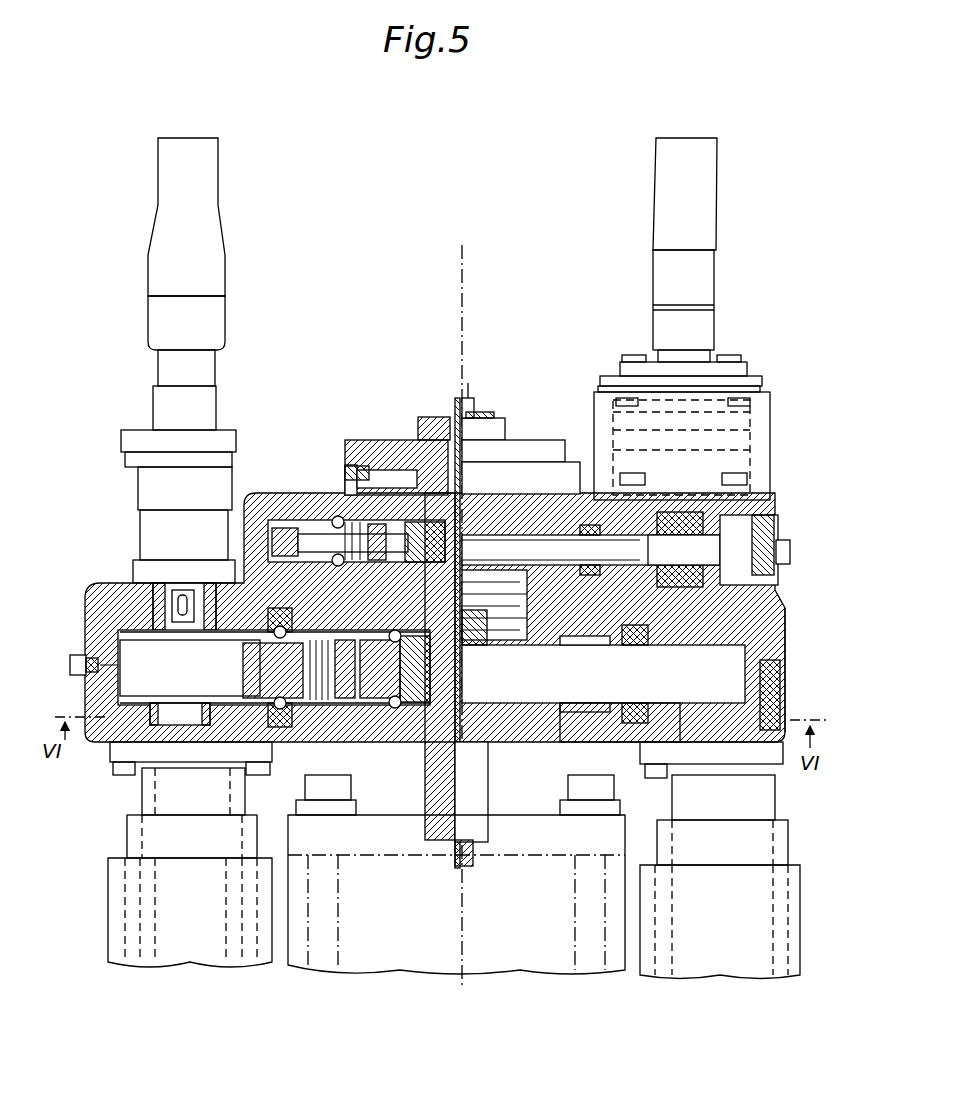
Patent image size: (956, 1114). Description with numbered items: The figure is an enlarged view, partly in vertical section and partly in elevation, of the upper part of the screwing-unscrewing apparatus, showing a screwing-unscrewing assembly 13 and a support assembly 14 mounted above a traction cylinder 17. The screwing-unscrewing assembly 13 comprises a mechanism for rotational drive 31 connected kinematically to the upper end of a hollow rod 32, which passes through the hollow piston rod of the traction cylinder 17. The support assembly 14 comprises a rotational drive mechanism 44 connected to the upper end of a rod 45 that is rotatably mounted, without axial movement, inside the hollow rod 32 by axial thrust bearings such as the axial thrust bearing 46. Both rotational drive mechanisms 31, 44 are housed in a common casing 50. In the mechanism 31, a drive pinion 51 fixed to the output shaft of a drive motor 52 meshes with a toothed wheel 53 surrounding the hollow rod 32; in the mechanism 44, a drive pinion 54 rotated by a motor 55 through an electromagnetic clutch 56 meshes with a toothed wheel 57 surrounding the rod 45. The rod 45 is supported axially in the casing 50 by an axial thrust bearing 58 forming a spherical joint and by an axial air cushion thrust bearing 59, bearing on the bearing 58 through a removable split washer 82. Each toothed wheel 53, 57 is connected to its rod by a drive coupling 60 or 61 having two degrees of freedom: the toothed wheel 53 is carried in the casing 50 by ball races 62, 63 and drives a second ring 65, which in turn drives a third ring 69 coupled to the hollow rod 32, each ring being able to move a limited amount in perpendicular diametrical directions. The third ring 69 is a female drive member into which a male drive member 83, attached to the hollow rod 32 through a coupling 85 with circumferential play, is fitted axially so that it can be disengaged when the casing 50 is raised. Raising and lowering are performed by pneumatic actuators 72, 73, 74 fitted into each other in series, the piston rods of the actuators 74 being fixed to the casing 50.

The screwing-unscrewing assembly 13 is at (98, 536).
The support assembly 14 is at (793, 440).
The traction cylinder 17 is at (412, 950).
The mechanism for rotational drive 31 is at (738, 660).
The hollow rod 32 is at (425, 824).
The rotational drive mechanism 44 is at (738, 548).
The rod 45 is at (452, 855).
The axial thrust bearing 46 is at (486, 604).
The common casing 50 is at (86, 605).
The drive pinion 51 is at (170, 676).
The drive motor 52 is at (226, 275).
The toothed wheel 53 is at (684, 682).
The drive pinion 54 is at (740, 560).
The motor 55 is at (716, 238).
The electromagnetic clutch 56 is at (760, 450).
The toothed wheel 57 is at (262, 516).
The axial thrust bearing 58 is at (416, 420).
The axial air cushion thrust bearing 59 is at (352, 458).
The drive coupling 60 is at (300, 708).
The drive coupling 61 is at (358, 530).
The ball race 62 is at (622, 735).
The ball race 63 is at (668, 648).
The second ring 65 is at (316, 705).
The third ring 69 is at (345, 705).
The actuator 72 is at (108, 910).
The actuator 73 is at (126, 836).
The actuator 74 is at (140, 792).
The split washer 82 is at (484, 418).
The male drive member 83 is at (385, 706).
The coupling 85 is at (436, 668).